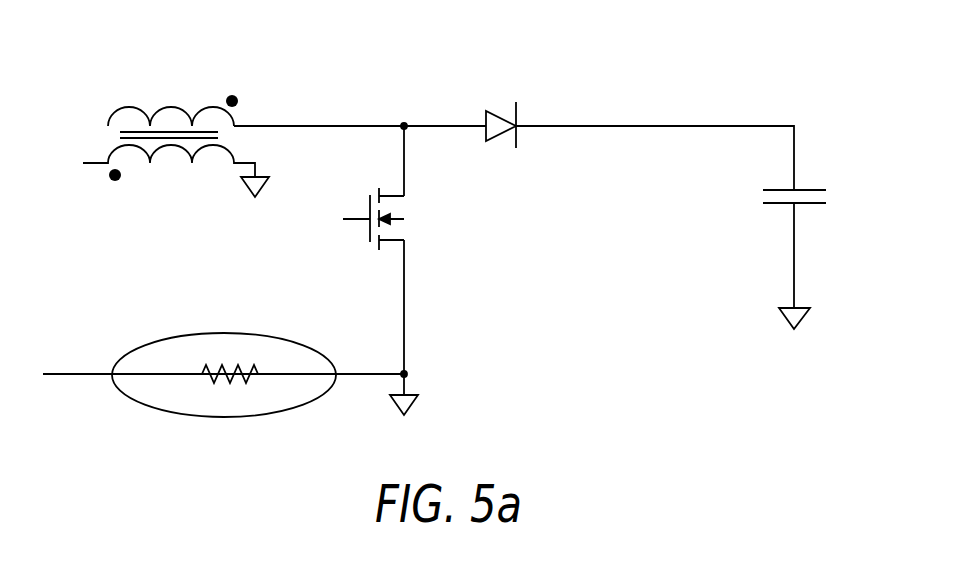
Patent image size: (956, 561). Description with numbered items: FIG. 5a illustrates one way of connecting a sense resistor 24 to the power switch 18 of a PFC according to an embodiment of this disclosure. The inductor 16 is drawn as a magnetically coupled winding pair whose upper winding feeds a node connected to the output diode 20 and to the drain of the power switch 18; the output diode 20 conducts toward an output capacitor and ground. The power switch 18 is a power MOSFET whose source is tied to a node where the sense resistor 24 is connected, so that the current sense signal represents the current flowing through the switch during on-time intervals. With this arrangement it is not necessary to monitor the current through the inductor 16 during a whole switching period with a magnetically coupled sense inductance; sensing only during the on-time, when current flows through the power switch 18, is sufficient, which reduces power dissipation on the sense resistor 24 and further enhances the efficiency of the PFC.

The inductor 16 is at (130, 108).
The power switch 18 is at (389, 197).
The output diode 20 is at (502, 112).
The sense resistor 24 is at (230, 372).